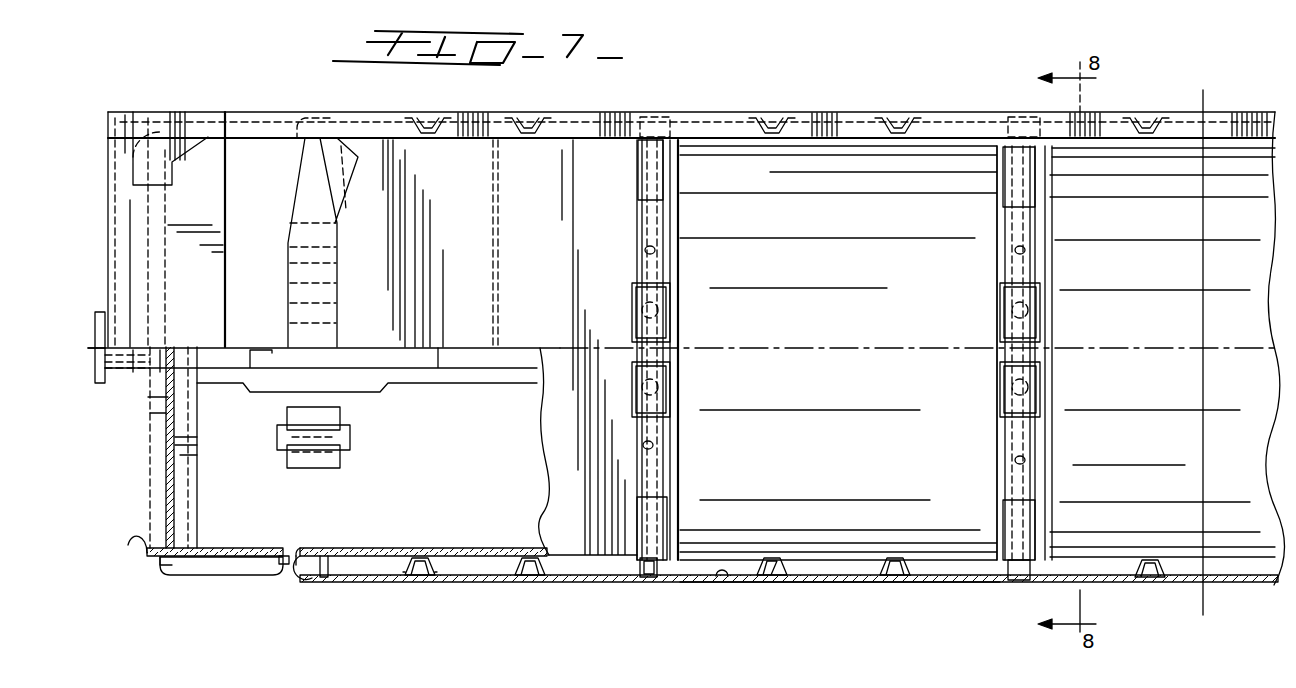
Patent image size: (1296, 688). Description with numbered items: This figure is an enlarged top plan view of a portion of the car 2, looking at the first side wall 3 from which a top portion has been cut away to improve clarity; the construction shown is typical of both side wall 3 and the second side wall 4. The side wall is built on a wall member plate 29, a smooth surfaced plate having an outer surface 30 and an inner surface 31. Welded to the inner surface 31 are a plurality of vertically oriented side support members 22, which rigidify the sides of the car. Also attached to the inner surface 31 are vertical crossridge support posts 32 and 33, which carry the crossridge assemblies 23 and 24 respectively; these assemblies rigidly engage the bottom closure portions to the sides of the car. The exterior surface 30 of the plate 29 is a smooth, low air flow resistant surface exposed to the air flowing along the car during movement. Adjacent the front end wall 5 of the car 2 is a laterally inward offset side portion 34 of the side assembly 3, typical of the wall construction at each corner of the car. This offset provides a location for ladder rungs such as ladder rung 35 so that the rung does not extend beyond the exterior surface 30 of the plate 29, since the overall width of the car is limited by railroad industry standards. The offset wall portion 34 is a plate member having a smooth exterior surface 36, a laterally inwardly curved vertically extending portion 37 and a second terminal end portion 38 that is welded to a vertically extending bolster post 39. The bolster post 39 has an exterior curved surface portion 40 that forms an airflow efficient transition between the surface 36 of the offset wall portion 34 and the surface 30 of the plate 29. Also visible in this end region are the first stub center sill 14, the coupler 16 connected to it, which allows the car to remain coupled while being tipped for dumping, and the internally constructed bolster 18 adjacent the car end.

The car 2 is at (1120, 112).
The first side wall 3 is at (818, 566).
The second side wall 4 is at (575, 136).
The first or front end wall 5 is at (150, 490).
The first stub center sill 14 is at (143, 374).
The coupler 16 is at (98, 385).
The bolster 18 is at (318, 205).
The side support members 22 is at (770, 123).
The crossridge assembly 23 is at (660, 190).
The crossridge assembly 24 is at (1040, 148).
The wall member plate 29 is at (935, 585).
The outer surface 30 is at (748, 580).
The inner surface 31 is at (722, 578).
The crossridge support post 32 is at (648, 580).
The crossridge support post 33 is at (1025, 582).
The offset side portion 34 is at (284, 566).
The ladder rung 35 is at (208, 576).
The exterior surface 36 is at (188, 566).
The laterally inwardly curved vertically extending portion 37 is at (132, 548).
The second terminal end portion 38 is at (298, 570).
The bolster post 39 is at (310, 556).
The exterior curved surface portion 40 is at (318, 582).